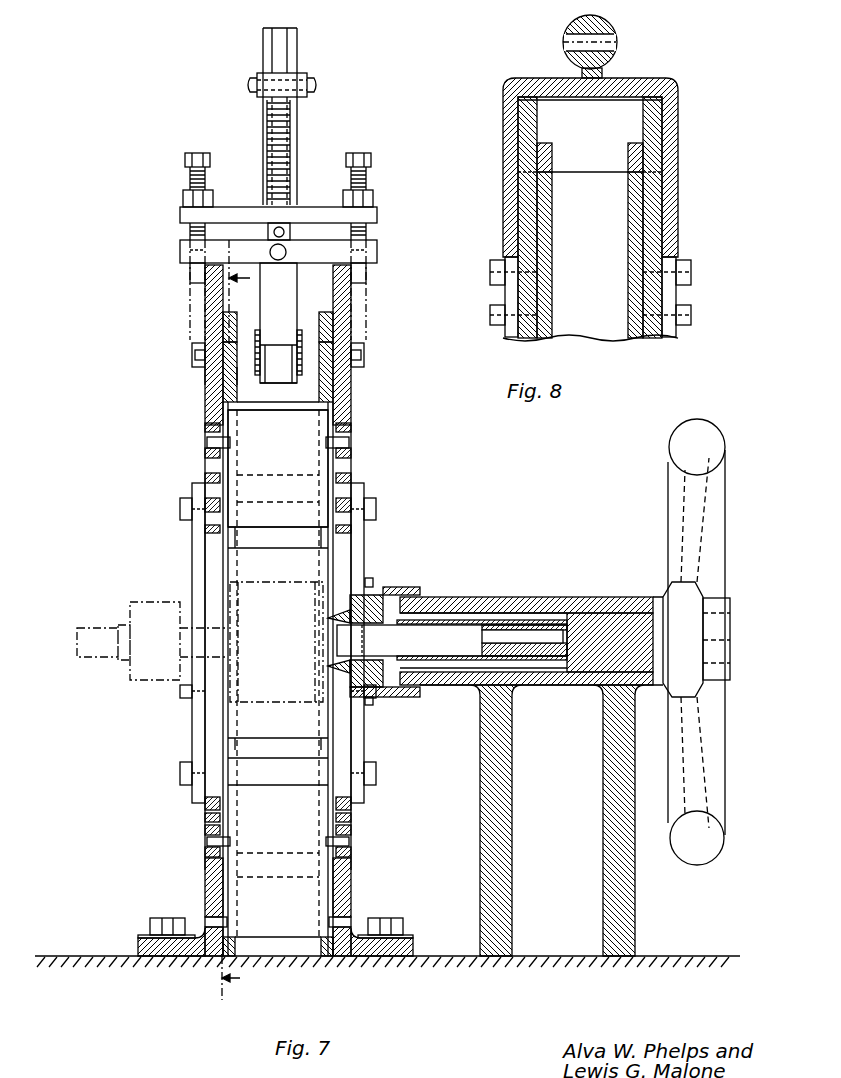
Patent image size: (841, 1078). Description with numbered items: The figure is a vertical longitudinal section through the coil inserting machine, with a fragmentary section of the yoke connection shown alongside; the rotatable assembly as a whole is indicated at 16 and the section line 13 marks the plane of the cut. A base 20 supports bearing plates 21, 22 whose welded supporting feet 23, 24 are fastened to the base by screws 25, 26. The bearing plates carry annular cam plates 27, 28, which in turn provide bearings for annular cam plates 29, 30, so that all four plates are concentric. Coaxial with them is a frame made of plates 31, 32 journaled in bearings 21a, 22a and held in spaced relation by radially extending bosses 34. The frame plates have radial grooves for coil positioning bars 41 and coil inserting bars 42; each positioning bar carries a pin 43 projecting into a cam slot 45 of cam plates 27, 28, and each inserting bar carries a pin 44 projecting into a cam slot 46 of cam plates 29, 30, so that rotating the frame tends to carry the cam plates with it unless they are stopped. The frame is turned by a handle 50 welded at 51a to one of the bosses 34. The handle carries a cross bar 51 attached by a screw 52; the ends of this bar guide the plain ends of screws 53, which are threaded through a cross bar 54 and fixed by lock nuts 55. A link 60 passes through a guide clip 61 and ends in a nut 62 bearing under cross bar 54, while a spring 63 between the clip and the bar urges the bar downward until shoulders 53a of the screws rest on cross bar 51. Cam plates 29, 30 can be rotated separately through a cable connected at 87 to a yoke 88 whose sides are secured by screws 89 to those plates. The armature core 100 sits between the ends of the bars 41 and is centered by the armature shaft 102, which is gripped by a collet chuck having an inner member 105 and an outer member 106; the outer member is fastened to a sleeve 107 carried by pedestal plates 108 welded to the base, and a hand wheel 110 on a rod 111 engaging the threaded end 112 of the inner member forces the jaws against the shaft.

In FIG. 7, the section line 13 is at (242, 620).
In FIG. 7, the cylinder assembly 16 is at (200, 455).
In FIG. 7, the base 20 is at (40, 955).
In FIG. 7, the bearing plate 21 is at (210, 302).
In FIG. 8, the bearing plate 21 is at (525, 138).
In FIG. 7, the bearing 21a is at (230, 322).
In FIG. 8, the bearing 21a is at (550, 155).
In FIG. 7, the bearing plate 22 is at (345, 303).
In FIG. 8, the bearing plate 22 is at (655, 146).
In FIG. 7, the bearing 22a is at (333, 322).
In FIG. 8, the bearing 22a is at (635, 148).
In FIG. 7, the supporting foot 23 is at (178, 958).
In FIG. 7, the supporting foot 24 is at (398, 958).
In FIG. 7, the screw 25 is at (160, 917).
In FIG. 7, the screw 26 is at (395, 917).
In FIG. 7, the annular cam plate 27 is at (230, 398).
In FIG. 8, the annular cam plate 27 is at (525, 215).
In FIG. 7, the annular cam plate 28 is at (326, 393).
In FIG. 8, the annular cam plate 28 is at (652, 220).
In FIG. 7, the annular cam plate 29 is at (208, 434).
In FIG. 8, the annular cam plate 29 is at (520, 338).
In FIG. 7, the annular cam plate 30 is at (346, 429).
In FIG. 8, the annular cam plate 30 is at (660, 338).
In FIG. 7, the frame plate 31 is at (225, 720).
In FIG. 8, the frame plate 31 is at (545, 221).
In FIG. 7, the frame plate 32 is at (332, 718).
In FIG. 8, the frame plate 32 is at (632, 242).
In FIG. 7, the radially extending boss 34 is at (320, 408).
In FIG. 7, the coil positioning bar 41 is at (300, 548).
In FIG. 7, the coil inserting bar 42 is at (300, 480).
In FIG. 7, the pin 43 is at (205, 357).
In FIG. 7, the pin 44 is at (207, 443).
In FIG. 7, the cam slot 45 is at (215, 372).
In FIG. 7, the cam slot 46 is at (352, 458).
In FIG. 7, the handle 50 is at (290, 48).
In FIG. 7, the cross bar 51 is at (180, 255).
In FIG. 7, the weld 51a is at (258, 352).
In FIG. 7, the screw 52 is at (288, 252).
In FIG. 7, the screw 53 is at (190, 273).
In FIG. 7, the shoulder 53a is at (203, 244).
In FIG. 7, the cross bar 54 is at (315, 215).
In FIG. 7, the lock nut 55 is at (192, 198).
In FIG. 7, the link 60 is at (282, 60).
In FIG. 7, the guide clip 61 is at (302, 76).
In FIG. 7, the nut 62 is at (277, 232).
In FIG. 7, the spring 63 is at (294, 135).
In FIG. 8, the cable connection 87 is at (612, 44).
In FIG. 8, the yoke 88 is at (682, 108).
In FIG. 8, the screw 89 is at (490, 315).
In FIG. 7, the armature core 100 is at (262, 705).
In FIG. 7, the armature shaft 102 is at (95, 645).
In FIG. 7, the inner member 105 is at (340, 655).
In FIG. 7, the outer member 106 is at (390, 588).
In FIG. 7, the sleeve 107 is at (538, 600).
In FIG. 7, the pedestal plate 108 is at (512, 838).
In FIG. 7, the hand wheel 110 is at (722, 846).
In FIG. 7, the rod 111 is at (615, 625).
In FIG. 7, the threaded end 112 is at (552, 656).